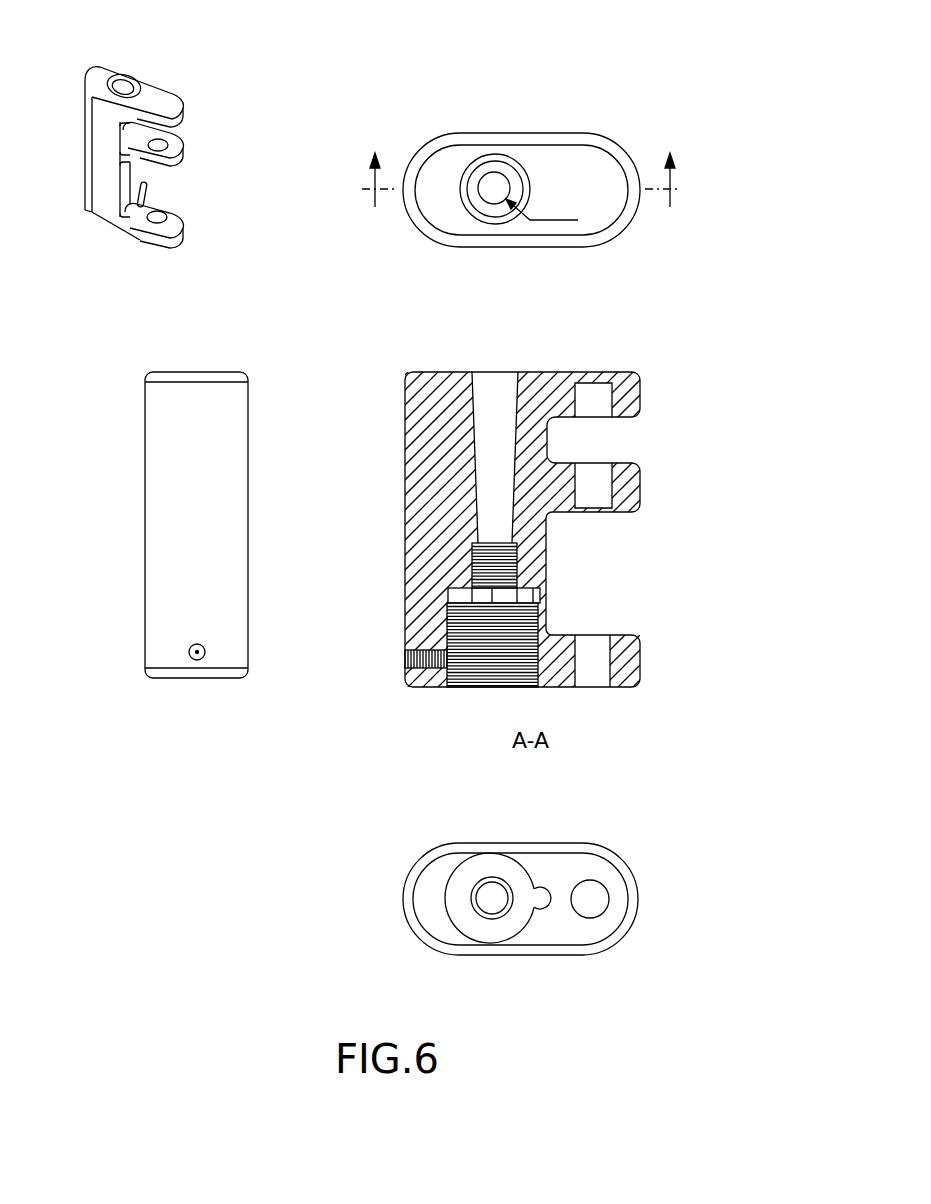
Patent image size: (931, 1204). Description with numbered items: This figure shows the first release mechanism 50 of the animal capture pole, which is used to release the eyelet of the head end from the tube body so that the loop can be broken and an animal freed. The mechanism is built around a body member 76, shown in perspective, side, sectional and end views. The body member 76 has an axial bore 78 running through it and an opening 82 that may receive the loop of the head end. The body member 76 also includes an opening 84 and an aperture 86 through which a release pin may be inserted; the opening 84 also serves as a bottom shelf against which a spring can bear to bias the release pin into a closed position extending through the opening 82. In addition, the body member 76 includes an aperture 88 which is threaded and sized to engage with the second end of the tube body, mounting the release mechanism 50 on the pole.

The first release mechanism 50 is at (722, 102).
The body member 76 is at (78, 213).
The axial bore 78 is at (130, 85).
The opening 82 is at (167, 142).
The opening 84 is at (165, 207).
The aperture 86 is at (597, 687).
The threaded aperture 88 is at (487, 688).